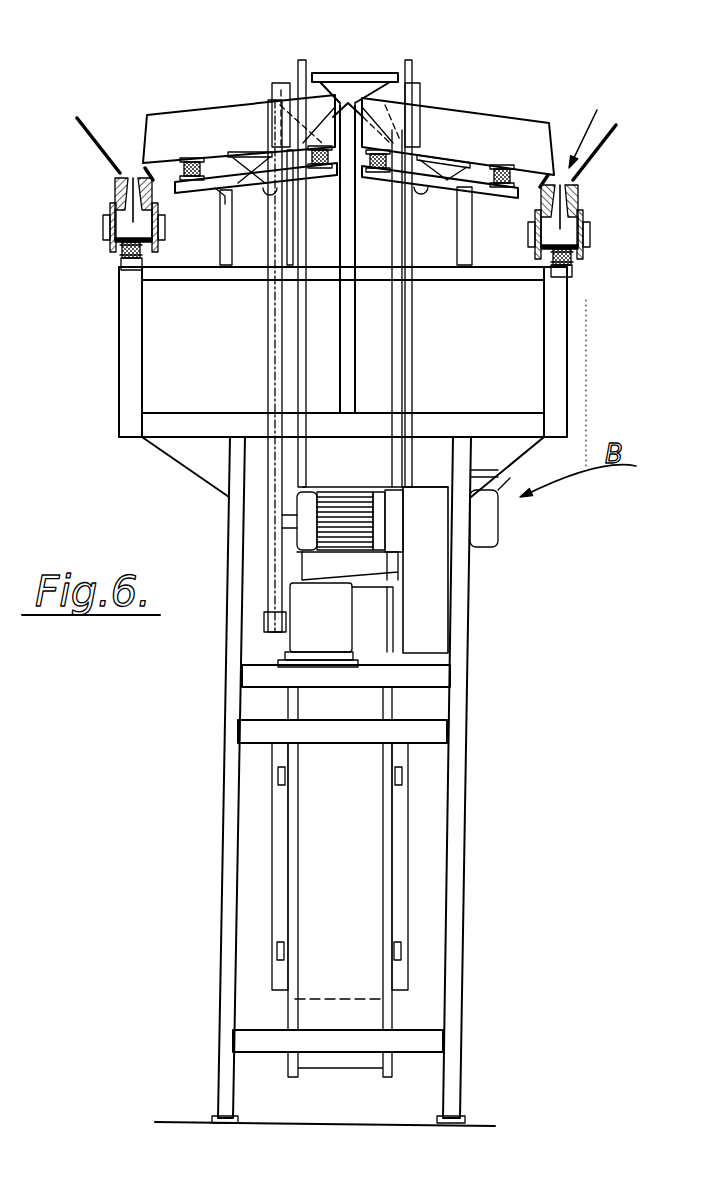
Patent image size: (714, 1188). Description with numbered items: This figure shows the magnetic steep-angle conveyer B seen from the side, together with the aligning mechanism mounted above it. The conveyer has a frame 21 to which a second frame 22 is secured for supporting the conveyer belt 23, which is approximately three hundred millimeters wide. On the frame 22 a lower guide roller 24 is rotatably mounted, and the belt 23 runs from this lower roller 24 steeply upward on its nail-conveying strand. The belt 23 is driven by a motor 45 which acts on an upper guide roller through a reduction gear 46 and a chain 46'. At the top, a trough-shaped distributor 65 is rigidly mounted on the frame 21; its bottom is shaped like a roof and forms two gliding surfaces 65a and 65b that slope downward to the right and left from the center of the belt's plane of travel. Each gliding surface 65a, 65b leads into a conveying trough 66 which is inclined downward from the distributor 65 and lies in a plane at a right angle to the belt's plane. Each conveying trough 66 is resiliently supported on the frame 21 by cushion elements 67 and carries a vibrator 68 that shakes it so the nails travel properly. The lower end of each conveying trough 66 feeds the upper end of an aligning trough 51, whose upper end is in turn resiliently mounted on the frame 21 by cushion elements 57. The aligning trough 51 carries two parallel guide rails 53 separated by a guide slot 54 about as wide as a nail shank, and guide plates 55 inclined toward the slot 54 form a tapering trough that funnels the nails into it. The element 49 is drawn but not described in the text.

The frame 21 is at (458, 632).
The frame 22 is at (400, 378).
The conveyer belt 23 is at (375, 345).
The lower guide roller 24 is at (318, 1002).
The motor 45 is at (340, 505).
The reduction gear 46 is at (273, 618).
The chain 46' is at (241, 366).
The upright post 49 is at (215, 190).
The aligning trough 51 is at (595, 125).
The guide rails 53 is at (116, 186).
The guide slot 54 is at (125, 205).
The guide plates 55 is at (95, 135).
The cushion elements 57 is at (120, 253).
The distributor 65 is at (350, 85).
The gliding surface 65a is at (307, 135).
The gliding surface 65b is at (405, 100).
The conveying trough 66 is at (190, 118).
The cushion elements 67 is at (188, 160).
The vibrator 68 is at (262, 170).